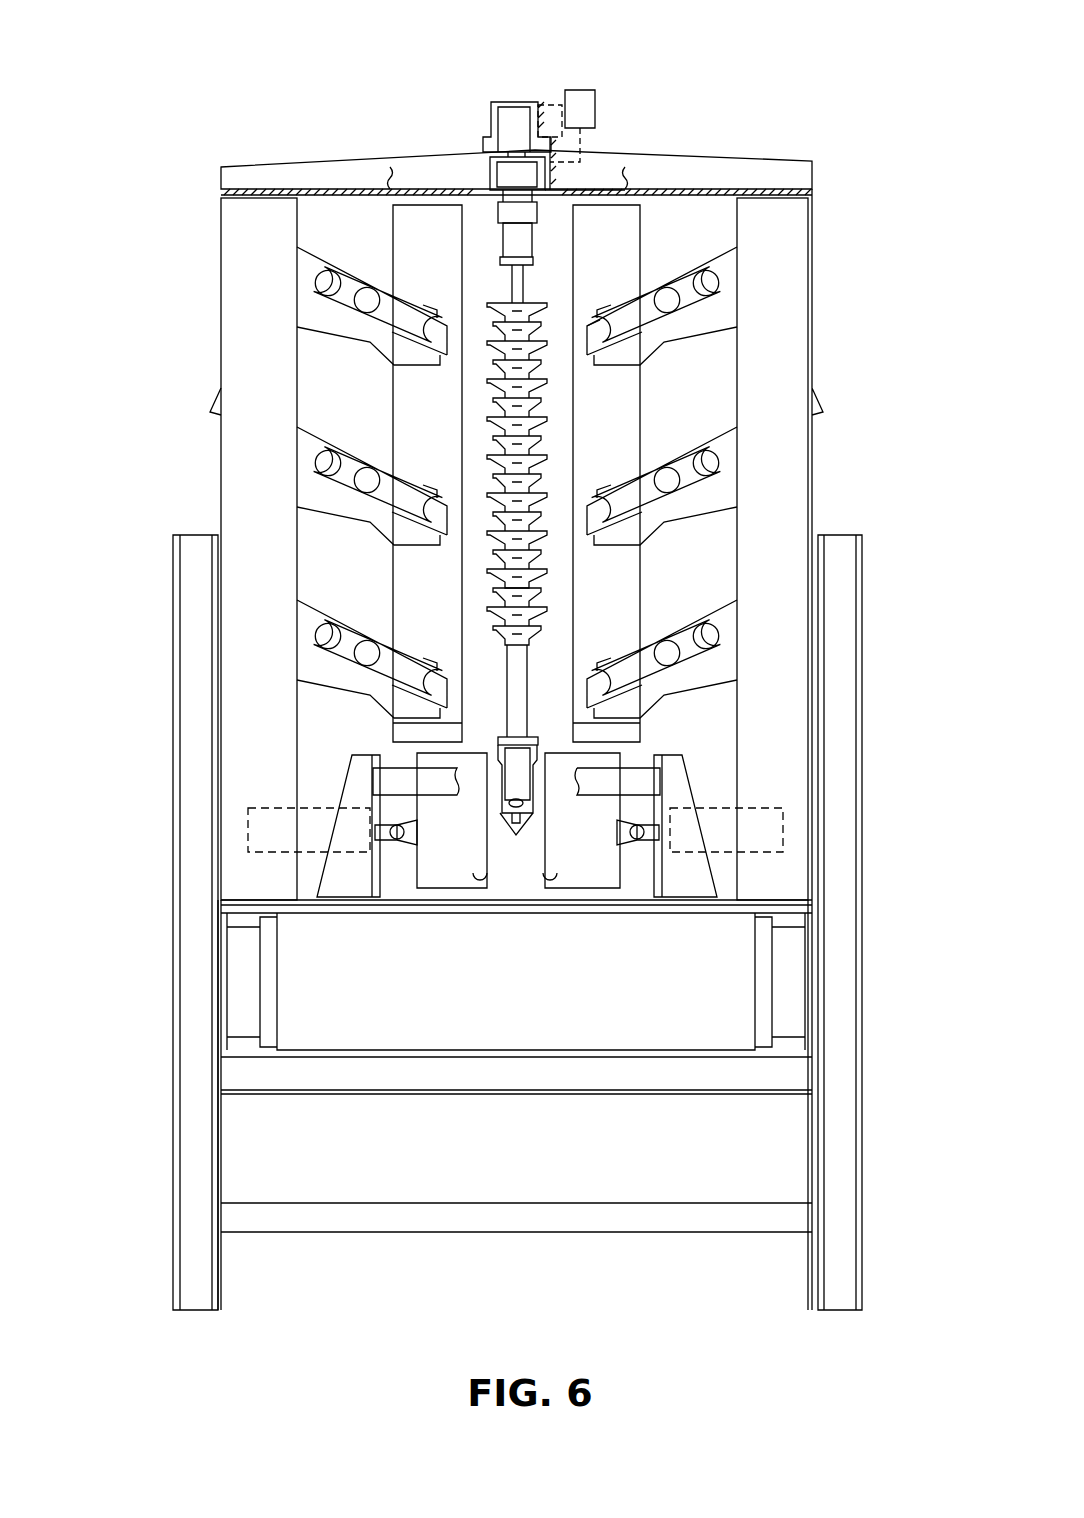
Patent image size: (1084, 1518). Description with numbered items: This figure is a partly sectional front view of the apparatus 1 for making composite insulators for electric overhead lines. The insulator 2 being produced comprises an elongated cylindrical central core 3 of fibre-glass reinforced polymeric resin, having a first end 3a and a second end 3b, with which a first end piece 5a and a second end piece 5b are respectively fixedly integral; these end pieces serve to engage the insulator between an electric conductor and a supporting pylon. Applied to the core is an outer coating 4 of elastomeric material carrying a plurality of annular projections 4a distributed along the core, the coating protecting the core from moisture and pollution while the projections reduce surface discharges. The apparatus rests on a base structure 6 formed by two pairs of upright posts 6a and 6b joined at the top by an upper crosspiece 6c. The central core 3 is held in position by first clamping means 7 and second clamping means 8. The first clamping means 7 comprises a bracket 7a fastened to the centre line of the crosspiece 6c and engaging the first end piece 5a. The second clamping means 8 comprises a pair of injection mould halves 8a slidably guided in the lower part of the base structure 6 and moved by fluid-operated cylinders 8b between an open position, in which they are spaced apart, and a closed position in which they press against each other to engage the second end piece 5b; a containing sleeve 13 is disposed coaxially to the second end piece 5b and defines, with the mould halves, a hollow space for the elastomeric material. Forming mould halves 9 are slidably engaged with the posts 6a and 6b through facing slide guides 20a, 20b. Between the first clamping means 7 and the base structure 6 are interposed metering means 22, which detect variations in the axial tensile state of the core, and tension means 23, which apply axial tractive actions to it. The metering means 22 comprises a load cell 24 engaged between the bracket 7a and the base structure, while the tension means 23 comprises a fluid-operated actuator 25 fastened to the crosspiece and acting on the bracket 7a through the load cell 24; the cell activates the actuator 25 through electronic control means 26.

The apparatus 1 is at (842, 183).
The insulator 2 is at (585, 303).
The central core 3 is at (518, 657).
The first end 3a is at (524, 297).
The second end 3b is at (512, 742).
The outer coating 4 is at (530, 412).
The annular projections 4a is at (548, 616).
The first end piece 5a is at (528, 251).
The second end piece 5b is at (519, 780).
The base structure 6 is at (173, 546).
The upright posts 6a is at (245, 300).
The upright posts 6b is at (790, 283).
The upper crosspiece 6c is at (755, 172).
The first clamping means 7 is at (489, 202).
The bracket 7a is at (507, 213).
The second clamping means 8 is at (438, 935).
The injection mould halves 8a is at (575, 880).
The fluid-operated cylinders 8b is at (307, 822).
The forming mould halves 9 is at (422, 606).
The containing sleeve 13 is at (494, 781).
The slide guide 20a is at (716, 612).
The slide guide 20b is at (313, 607).
The metering means 22 is at (566, 176).
The tension means 23 is at (550, 120).
The load cell 24 is at (498, 173).
The fluid-operated actuator 25 is at (497, 123).
The control means 26 is at (580, 102).